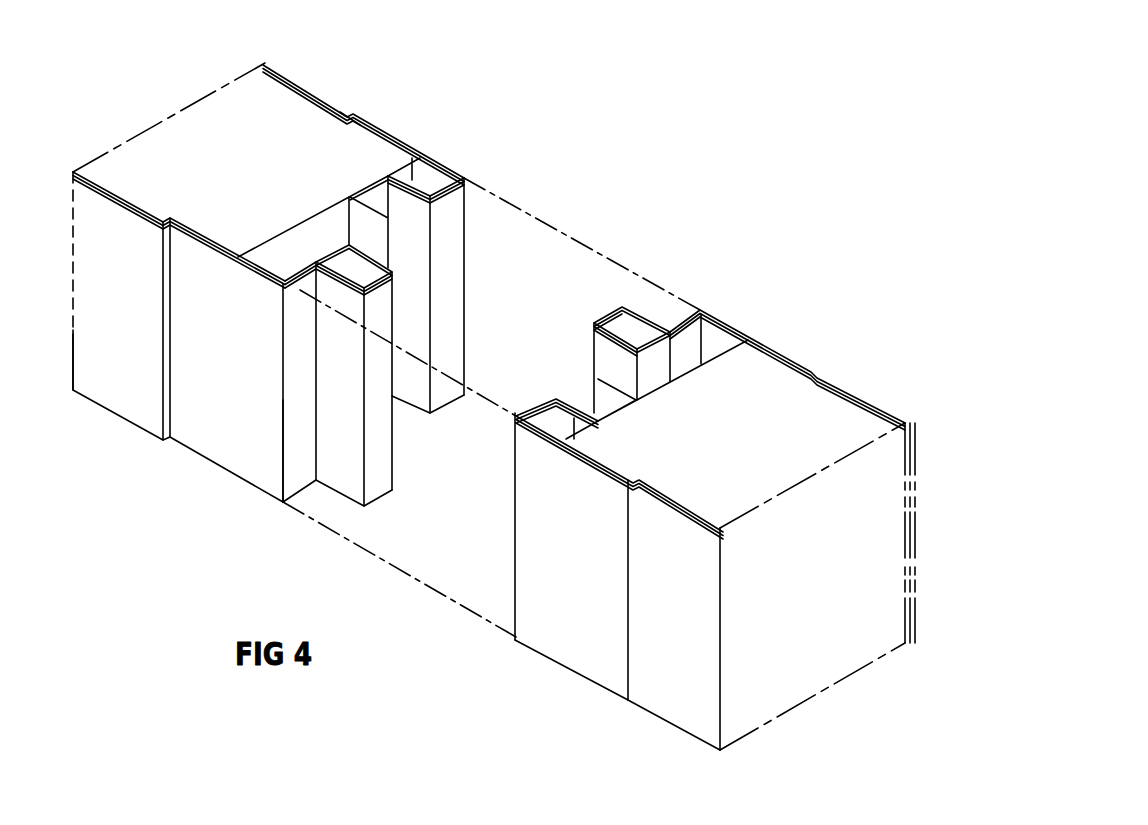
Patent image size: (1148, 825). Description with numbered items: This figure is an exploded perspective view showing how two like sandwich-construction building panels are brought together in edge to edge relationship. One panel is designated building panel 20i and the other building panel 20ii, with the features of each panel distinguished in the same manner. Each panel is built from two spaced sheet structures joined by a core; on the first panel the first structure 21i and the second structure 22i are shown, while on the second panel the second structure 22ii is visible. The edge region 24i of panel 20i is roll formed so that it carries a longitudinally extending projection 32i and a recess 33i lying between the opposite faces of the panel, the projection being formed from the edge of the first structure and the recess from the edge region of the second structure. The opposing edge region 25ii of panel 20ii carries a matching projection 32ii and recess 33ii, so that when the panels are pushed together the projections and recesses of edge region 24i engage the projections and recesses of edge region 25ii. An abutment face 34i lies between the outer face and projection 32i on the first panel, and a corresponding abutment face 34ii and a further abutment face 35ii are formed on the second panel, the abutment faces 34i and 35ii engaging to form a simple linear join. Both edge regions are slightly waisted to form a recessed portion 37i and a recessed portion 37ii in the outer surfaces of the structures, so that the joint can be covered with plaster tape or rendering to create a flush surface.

The building panel 20i is at (280, 103).
The first structure 21i is at (143, 403).
The second structure 22i is at (372, 118).
The edge region 24i is at (413, 280).
The projection 32i is at (380, 476).
The recess 33i is at (413, 218).
The abutment face 34i is at (306, 470).
The recessed portion 37i is at (242, 447).
The building panel 20ii is at (823, 410).
The second structure 22ii is at (799, 361).
The edge region 25ii is at (491, 407).
The projection 32ii is at (618, 318).
The recess 33ii is at (580, 402).
The abutment face 34ii is at (680, 318).
The abutment face 35ii is at (520, 597).
The recessed portion 37ii is at (602, 645).